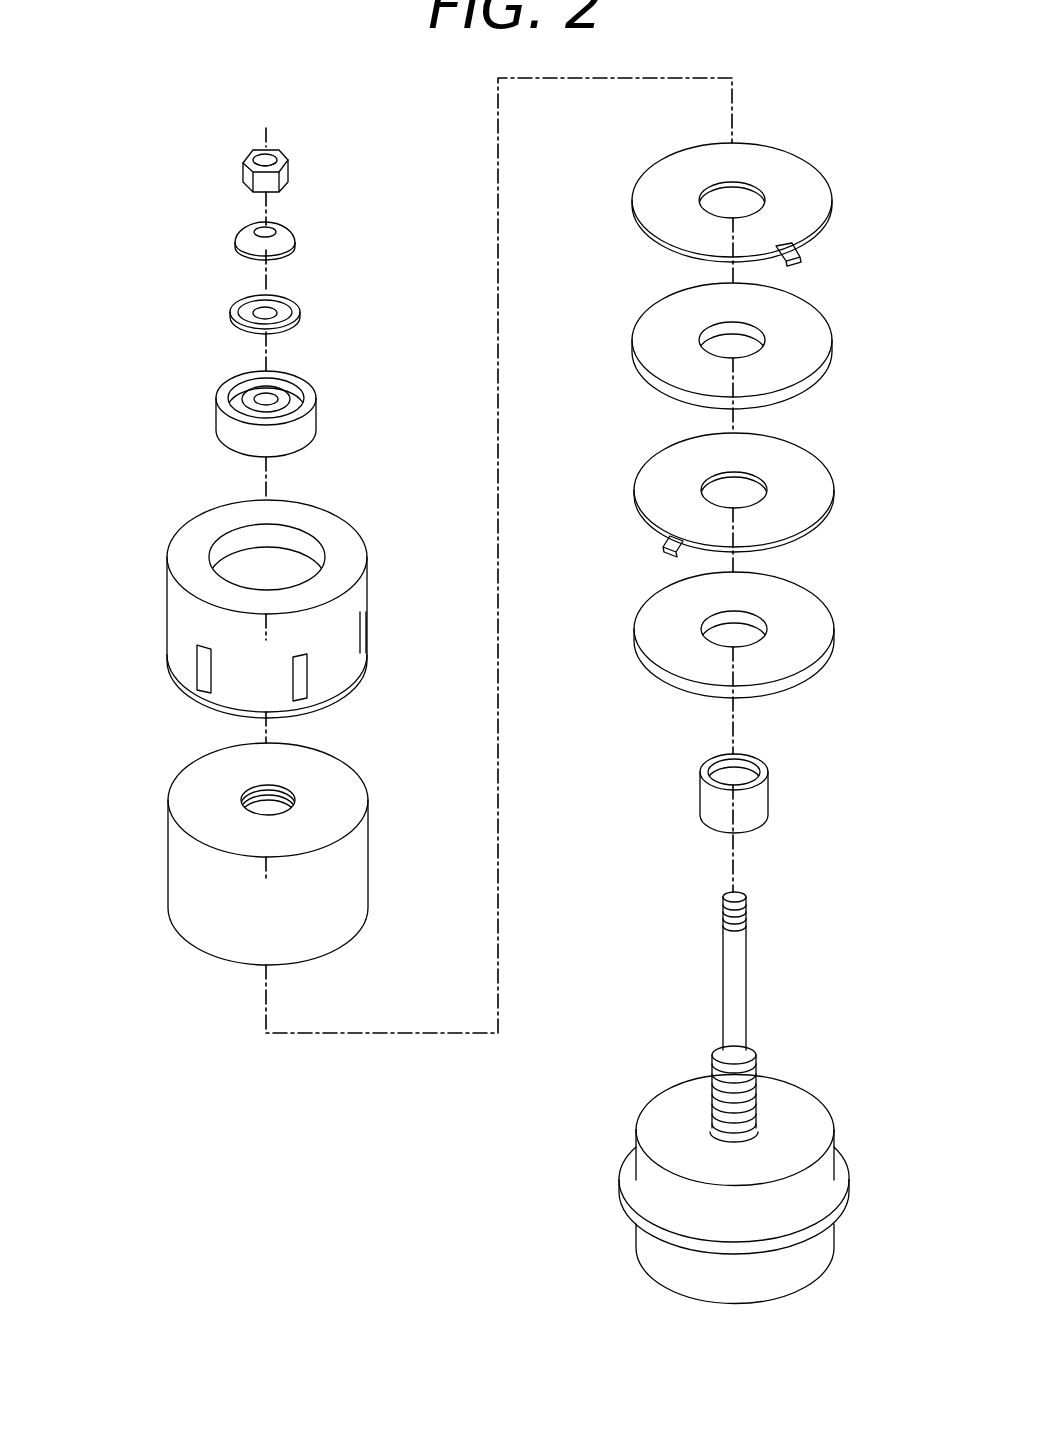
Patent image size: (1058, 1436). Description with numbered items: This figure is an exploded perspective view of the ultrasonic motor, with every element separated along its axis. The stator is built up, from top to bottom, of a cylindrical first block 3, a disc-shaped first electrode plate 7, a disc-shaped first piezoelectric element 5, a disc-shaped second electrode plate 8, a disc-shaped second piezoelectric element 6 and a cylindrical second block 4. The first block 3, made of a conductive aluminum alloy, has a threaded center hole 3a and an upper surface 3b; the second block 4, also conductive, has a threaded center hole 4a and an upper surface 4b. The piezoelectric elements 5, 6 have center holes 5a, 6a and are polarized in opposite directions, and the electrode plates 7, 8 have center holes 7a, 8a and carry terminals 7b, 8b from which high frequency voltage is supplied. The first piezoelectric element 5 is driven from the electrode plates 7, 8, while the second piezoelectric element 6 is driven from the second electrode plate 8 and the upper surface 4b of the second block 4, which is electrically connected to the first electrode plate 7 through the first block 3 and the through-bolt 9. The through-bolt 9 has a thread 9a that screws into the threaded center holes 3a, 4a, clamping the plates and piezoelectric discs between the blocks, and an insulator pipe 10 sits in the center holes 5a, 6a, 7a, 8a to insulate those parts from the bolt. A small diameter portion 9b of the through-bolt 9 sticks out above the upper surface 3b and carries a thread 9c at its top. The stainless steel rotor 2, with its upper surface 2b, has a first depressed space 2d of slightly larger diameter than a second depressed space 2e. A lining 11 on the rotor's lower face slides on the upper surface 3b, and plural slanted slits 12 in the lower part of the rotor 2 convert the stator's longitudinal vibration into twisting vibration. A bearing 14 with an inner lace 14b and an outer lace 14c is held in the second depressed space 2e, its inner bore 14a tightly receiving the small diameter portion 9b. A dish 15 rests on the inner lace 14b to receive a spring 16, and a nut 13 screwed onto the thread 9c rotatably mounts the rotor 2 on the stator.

The rotor 2 is at (268, 608).
The upper surface 2b is at (332, 528).
The first depressed space 2d is at (232, 541).
The second depressed space 2e is at (240, 566).
The first block 3 is at (267, 854).
The threaded center hole 3a is at (278, 792).
The upper surface 3b is at (197, 780).
The second block 4 is at (748, 1185).
The threaded center hole 4a is at (728, 1136).
The upper surface 4b is at (792, 1092).
The first piezoelectric element 5 is at (749, 346).
The center hole 5a is at (717, 327).
The second piezoelectric element 6 is at (750, 635).
The center hole 6a is at (720, 614).
The first electrode plate 7 is at (747, 216).
The center hole 7a is at (712, 190).
The terminal 7b is at (799, 262).
The second electrode plate 8 is at (742, 507).
The center hole 8a is at (720, 474).
The terminal 8b is at (666, 553).
The through-bolt 9 is at (730, 1012).
The thread 9a is at (718, 1060).
The small diameter portion 9b is at (730, 961).
The thread 9c is at (724, 914).
The insulator pipe 10 is at (760, 806).
The lining 11 is at (210, 696).
The slit 12 is at (300, 670).
The nut 13 is at (295, 176).
The bearing 14 is at (252, 397).
The inner bore 14a is at (293, 380).
The inner lace 14b is at (243, 378).
The outer lace 14c is at (222, 400).
The dish 15 is at (290, 310).
The spring 16 is at (285, 236).